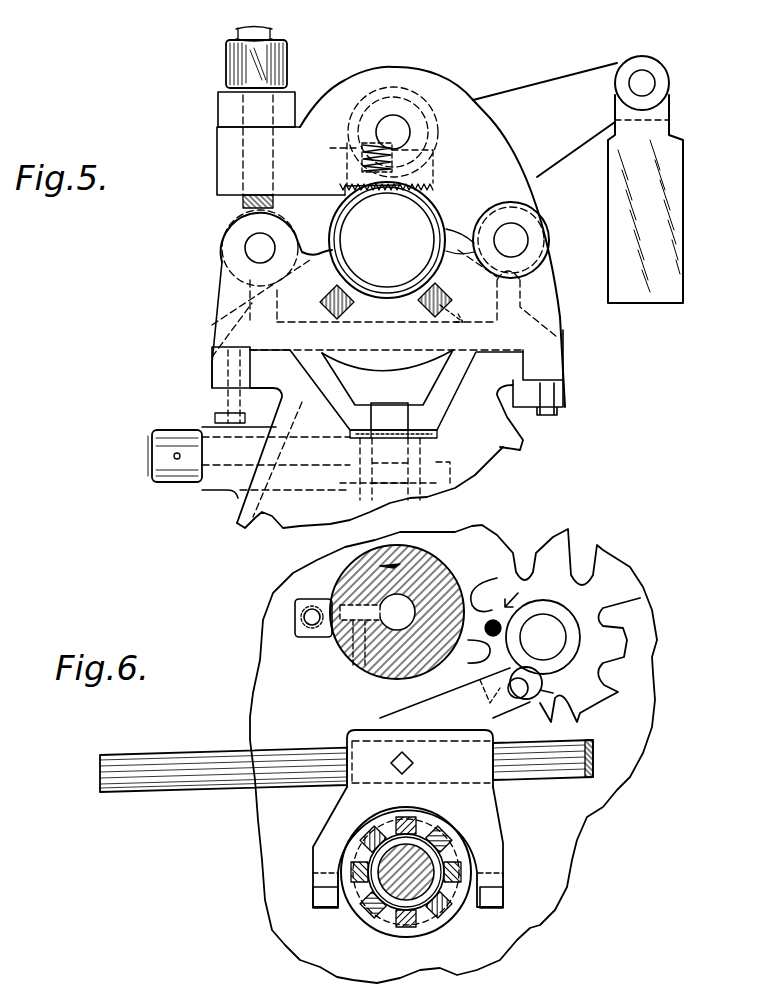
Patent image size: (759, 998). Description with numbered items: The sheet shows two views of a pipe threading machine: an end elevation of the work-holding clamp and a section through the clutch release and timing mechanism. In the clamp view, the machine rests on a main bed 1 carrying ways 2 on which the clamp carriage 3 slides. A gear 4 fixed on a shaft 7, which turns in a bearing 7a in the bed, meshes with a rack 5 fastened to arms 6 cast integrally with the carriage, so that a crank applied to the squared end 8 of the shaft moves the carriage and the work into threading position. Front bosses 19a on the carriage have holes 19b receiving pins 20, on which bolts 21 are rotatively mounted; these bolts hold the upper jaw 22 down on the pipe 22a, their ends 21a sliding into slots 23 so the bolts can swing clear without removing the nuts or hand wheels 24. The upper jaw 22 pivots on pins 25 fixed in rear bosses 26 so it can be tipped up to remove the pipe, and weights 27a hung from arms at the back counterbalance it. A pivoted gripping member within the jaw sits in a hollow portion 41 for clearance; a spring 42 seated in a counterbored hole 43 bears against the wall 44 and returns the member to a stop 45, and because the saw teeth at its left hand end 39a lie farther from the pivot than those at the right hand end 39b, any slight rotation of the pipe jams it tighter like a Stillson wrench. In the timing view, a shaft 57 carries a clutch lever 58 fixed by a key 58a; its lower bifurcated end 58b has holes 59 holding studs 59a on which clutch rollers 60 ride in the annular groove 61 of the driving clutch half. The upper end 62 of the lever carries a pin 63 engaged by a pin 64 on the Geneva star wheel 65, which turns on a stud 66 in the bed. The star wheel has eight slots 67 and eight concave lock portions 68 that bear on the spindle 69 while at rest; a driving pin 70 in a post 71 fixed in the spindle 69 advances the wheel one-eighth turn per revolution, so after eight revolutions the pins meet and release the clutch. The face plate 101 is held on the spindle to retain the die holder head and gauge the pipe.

In FIG. 5, the main bed 1 is at (500, 446).
In FIG. 5, the ways 2 is at (265, 365).
In FIG. 5, the clamp carriage 3 is at (548, 297).
In FIG. 5, the gear 4 is at (443, 487).
In FIG. 5, the rack 5 is at (408, 418).
In FIG. 5, the arms 6 is at (440, 390).
In FIG. 5, the shaft 7 is at (205, 490).
In FIG. 5, the bearing 7a is at (233, 489).
In FIG. 5, the squared end of shaft 8 is at (152, 462).
In FIG. 5, the front bosses 19a is at (230, 270).
In FIG. 5, the holes 19b is at (243, 245).
In FIG. 5, the pins 20 is at (252, 240).
In FIG. 5, the bolts 21 is at (277, 204).
In FIG. 5, the bolt ends 21a is at (265, 138).
In FIG. 5, the upper jaw 22 is at (420, 88).
In FIG. 5, the pipe 22a is at (430, 218).
In FIG. 5, the slots 23 is at (240, 157).
In FIG. 5, the nuts or hand wheels 24 is at (280, 58).
In FIG. 5, the pins 25 is at (520, 240).
In FIG. 5, the rear bosses 26 is at (532, 215).
In FIG. 5, the weights 27a is at (667, 200).
In FIG. 5, the left hand end of gripping member 39a is at (345, 184).
In FIG. 5, the right hand end of gripping member 39b is at (425, 186).
In FIG. 5, the hollow portion 41 is at (430, 110).
In FIG. 5, the spring 42 is at (433, 150).
In FIG. 5, the counterbored hole 43 is at (372, 187).
In FIG. 5, the wall 44 is at (428, 177).
In FIG. 5, the stop 45 is at (362, 155).
In FIG. 6, the shaft 57 is at (318, 762).
In FIG. 6, the clutch lever 58 is at (487, 830).
In FIG. 6, the key 58a is at (395, 752).
In FIG. 6, the lower bifurcated end 58b is at (503, 893).
In FIG. 6, the holes 59 is at (487, 867).
In FIG. 6, the studs 59a is at (318, 908).
In FIG. 6, the clutch rollers 60 is at (353, 895).
In FIG. 6, the annular groove 61 is at (392, 925).
In FIG. 6, the upper end of clutch lever 62 is at (504, 721).
In FIG. 6, the pin 63 is at (529, 690).
In FIG. 6, the pin 64 is at (494, 620).
In FIG. 6, the Geneva star wheel 65 is at (597, 593).
In FIG. 6, the stud 66 is at (553, 637).
In FIG. 6, the slots 67 is at (513, 556).
In FIG. 6, the concave lock portions 68 is at (471, 583).
In FIG. 6, the spindle 69 is at (383, 550).
In FIG. 6, the star wheel driving pin 70 is at (313, 609).
In FIG. 6, the post 71 is at (302, 639).
In FIG. 6, the face plate 101 is at (412, 615).